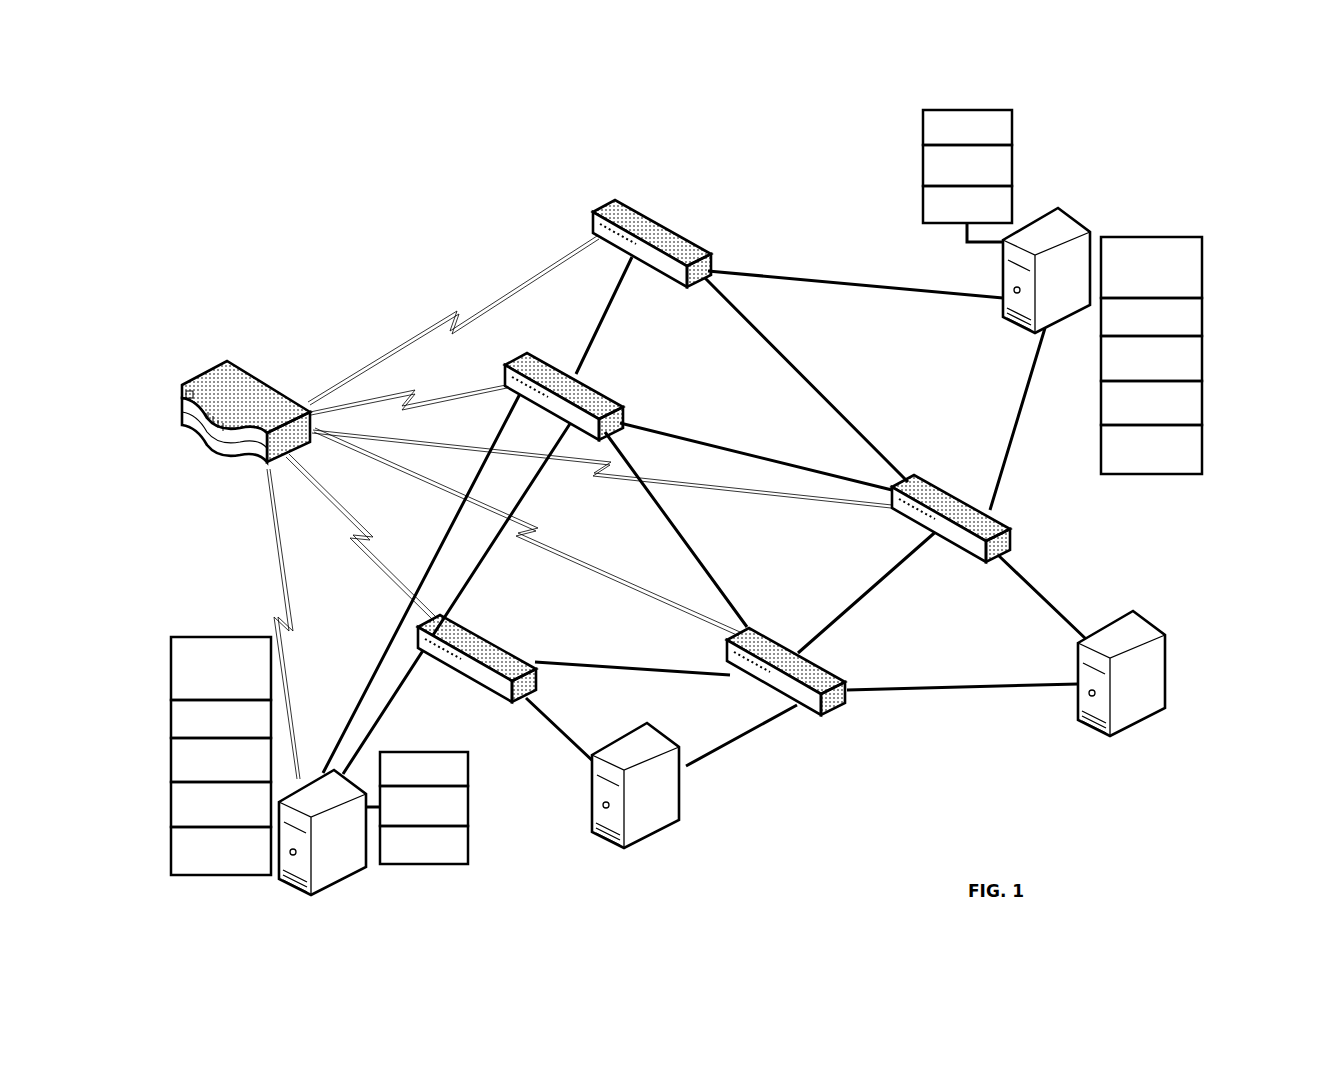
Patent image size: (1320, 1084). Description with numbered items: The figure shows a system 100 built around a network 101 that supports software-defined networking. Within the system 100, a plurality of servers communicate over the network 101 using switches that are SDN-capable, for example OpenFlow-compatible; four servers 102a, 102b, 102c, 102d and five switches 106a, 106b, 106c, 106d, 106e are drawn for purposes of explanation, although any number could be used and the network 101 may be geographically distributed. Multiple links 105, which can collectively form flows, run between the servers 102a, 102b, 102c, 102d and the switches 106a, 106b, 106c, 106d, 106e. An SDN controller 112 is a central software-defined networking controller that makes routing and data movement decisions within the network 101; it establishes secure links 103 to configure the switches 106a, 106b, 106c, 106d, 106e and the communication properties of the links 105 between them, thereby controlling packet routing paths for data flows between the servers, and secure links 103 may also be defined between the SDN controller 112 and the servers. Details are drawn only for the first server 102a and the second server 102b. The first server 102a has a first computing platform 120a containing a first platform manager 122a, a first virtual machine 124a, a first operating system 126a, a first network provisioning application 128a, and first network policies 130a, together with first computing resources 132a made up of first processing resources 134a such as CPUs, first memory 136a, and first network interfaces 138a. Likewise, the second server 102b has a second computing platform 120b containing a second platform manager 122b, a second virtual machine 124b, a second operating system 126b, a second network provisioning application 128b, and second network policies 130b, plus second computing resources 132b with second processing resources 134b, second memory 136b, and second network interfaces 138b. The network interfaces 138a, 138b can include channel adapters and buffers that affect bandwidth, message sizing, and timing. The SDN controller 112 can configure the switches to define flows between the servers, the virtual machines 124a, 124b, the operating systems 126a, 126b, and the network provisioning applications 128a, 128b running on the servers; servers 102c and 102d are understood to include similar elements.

The system 100 is at (268, 131).
The network 101 is at (503, 205).
The first server 102a is at (322, 892).
The second server 102b is at (1040, 215).
The server 102c is at (684, 793).
The server 102d is at (1170, 630).
The secure links 103 is at (445, 318).
The links 105 is at (626, 285).
The switch 106a is at (472, 628).
The switch 106b is at (620, 388).
The switch 106c is at (715, 245).
The switch 106d is at (925, 470).
The switch 106e is at (845, 665).
The SDN controller 112 is at (232, 364).
The first computing platform 120a is at (194, 729).
The second computing platform 120b is at (1183, 325).
The first platform manager 122a is at (171, 838).
The second platform manager 122b is at (1202, 450).
The first virtual machine 124a is at (171, 788).
The second virtual machine 124b is at (1202, 398).
The first operating system 126a is at (171, 750).
The second operating system 126b is at (1202, 362).
The first network provisioning application 128a is at (171, 710).
The second network provisioning application 128b is at (1202, 316).
The first network policies 130a is at (171, 668).
The second network policies 130b is at (1202, 280).
The first computing resources 132a is at (472, 811).
The second computing resources 132b is at (974, 176).
The first processing resources 134a is at (468, 756).
The second processing resources 134b is at (923, 124).
The first memory 136a is at (468, 796).
The second memory 136b is at (923, 162).
The first network interfaces 138a is at (468, 838).
The second network interfaces 138b is at (923, 208).